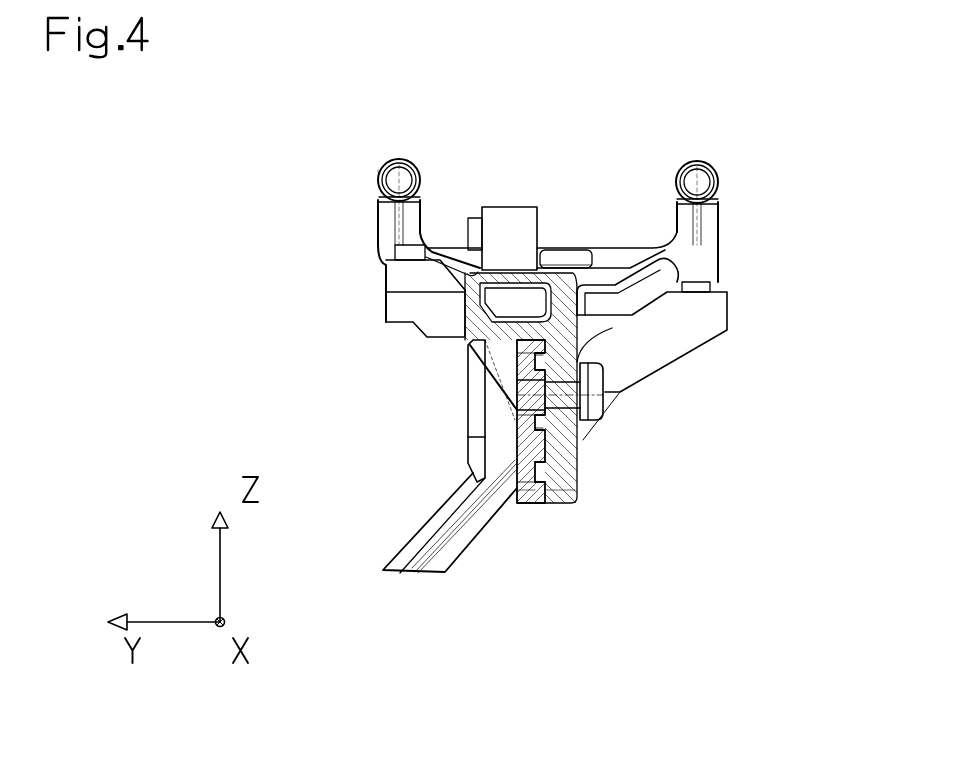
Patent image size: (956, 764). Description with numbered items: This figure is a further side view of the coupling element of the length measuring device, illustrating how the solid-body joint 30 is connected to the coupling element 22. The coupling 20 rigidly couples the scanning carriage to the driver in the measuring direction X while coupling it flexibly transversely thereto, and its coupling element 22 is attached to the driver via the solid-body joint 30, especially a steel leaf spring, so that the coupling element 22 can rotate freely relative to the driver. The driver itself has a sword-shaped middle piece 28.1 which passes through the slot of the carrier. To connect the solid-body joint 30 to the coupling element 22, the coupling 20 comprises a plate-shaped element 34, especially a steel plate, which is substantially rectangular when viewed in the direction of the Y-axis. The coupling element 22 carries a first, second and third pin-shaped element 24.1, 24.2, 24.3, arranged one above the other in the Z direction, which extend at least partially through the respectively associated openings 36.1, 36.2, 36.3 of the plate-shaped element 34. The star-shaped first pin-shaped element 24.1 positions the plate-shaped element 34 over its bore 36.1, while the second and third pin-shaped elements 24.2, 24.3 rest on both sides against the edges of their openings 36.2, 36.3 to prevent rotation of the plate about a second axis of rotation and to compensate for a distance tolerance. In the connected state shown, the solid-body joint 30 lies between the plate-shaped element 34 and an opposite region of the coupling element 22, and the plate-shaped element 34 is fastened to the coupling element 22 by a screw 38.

The coupling 20 is at (205, 332).
The coupling element 22 is at (388, 218).
The first pin-shaped element 24.1 is at (543, 432).
The second pin-shaped element 24.2 is at (603, 390).
The third pin-shaped element 24.3 is at (543, 477).
The sword-shaped middle piece 28.1 is at (455, 500).
The solid-body joint 30 is at (546, 500).
The plate-shaped element 34 is at (530, 490).
The opening 36.1 is at (527, 420).
The opening 36.2 is at (523, 357).
The opening 36.3 is at (523, 482).
The screw 38 is at (540, 390).